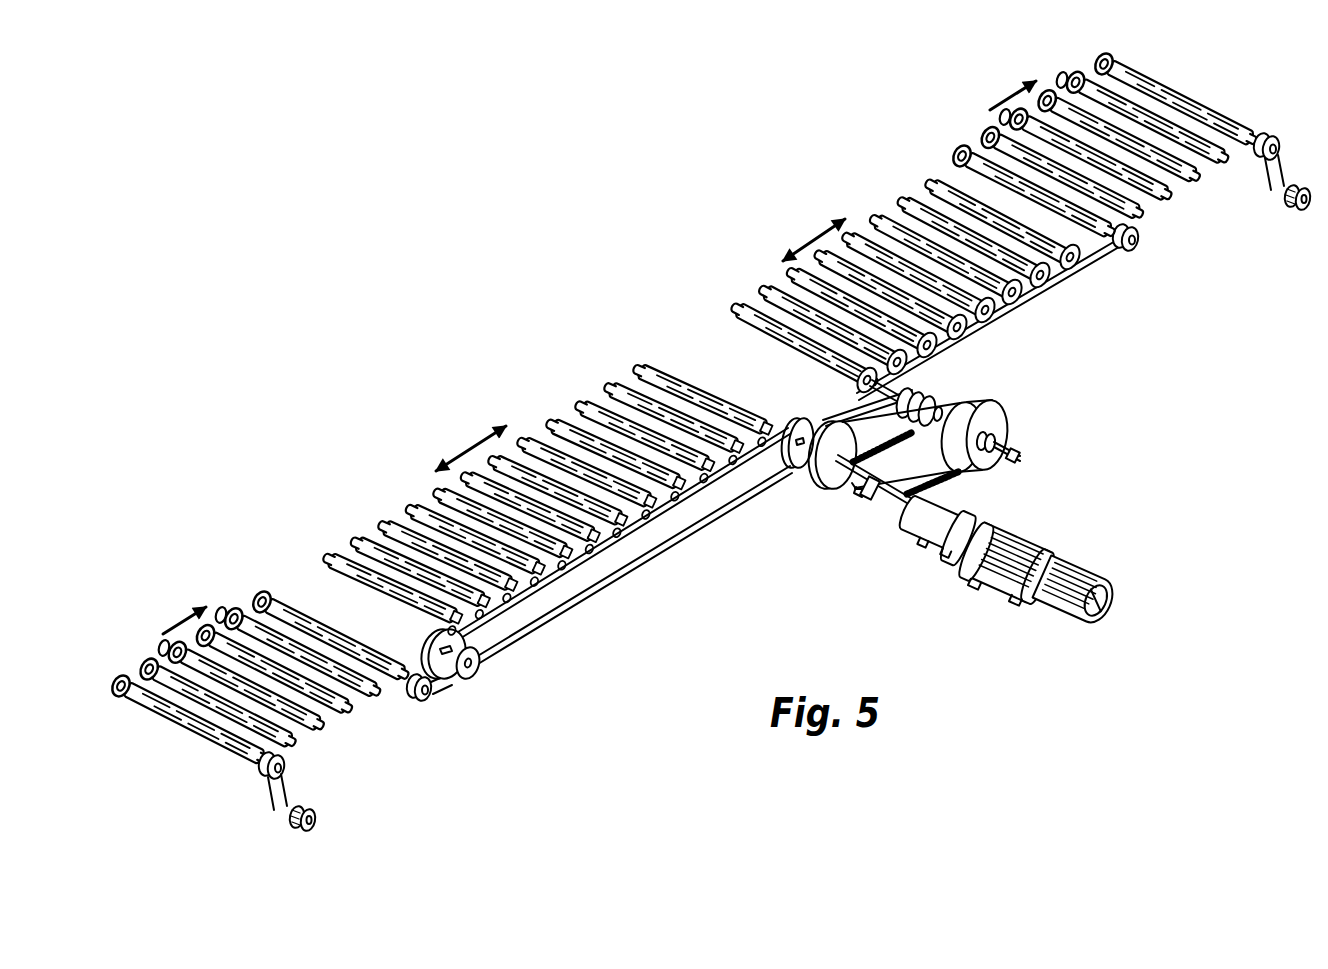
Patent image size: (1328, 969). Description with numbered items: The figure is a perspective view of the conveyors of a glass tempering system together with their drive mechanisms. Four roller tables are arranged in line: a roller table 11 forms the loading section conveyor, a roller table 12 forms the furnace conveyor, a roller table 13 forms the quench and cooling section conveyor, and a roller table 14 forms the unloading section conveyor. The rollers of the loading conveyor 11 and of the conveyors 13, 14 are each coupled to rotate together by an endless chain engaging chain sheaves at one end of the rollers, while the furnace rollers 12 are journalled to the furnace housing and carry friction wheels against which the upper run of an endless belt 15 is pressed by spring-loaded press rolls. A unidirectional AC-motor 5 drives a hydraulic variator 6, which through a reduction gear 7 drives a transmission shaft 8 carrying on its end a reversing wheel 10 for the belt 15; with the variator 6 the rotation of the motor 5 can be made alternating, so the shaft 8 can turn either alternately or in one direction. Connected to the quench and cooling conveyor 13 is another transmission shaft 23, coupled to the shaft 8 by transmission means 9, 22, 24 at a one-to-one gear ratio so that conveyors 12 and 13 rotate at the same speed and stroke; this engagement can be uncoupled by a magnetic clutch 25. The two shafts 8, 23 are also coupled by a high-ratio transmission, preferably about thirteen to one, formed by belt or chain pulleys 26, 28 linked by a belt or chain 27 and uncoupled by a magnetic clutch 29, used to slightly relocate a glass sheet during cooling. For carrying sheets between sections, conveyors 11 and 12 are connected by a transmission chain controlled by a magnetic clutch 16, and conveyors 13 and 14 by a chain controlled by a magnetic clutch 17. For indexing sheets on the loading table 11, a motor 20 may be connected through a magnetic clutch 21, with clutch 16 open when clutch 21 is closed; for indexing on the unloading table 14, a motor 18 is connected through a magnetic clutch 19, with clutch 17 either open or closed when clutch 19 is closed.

The unidirectional AC-motor 5 is at (1065, 596).
The hydraulic variator 6 is at (1003, 568).
The reduction gear 7 is at (940, 537).
The transmission shaft 8 is at (856, 480).
The transmission means 9 is at (830, 478).
The reversing wheel 10 is at (800, 465).
The roller table 11 is at (222, 578).
The roller table 12 is at (613, 350).
The roller table 13 is at (856, 190).
The roller table 14 is at (1195, 82).
The endless belt 15 is at (698, 528).
The magnetic clutch 16 is at (430, 694).
The magnetic clutch 17 is at (1137, 249).
The motor 18 is at (1292, 212).
The magnetic clutch 19 is at (1268, 137).
The motor 20 is at (316, 818).
The magnetic clutch 21 is at (284, 762).
The transmission means 22 is at (832, 416).
The transmission shaft 23 is at (1012, 454).
The transmission means 24 is at (936, 392).
The magnetic clutch 25 is at (935, 400).
The belt or chain pulley 26 is at (874, 500).
The belt or chain 27 is at (960, 476).
The belt or chain pulley 28 is at (1002, 418).
The magnetic clutch 29 is at (996, 438).